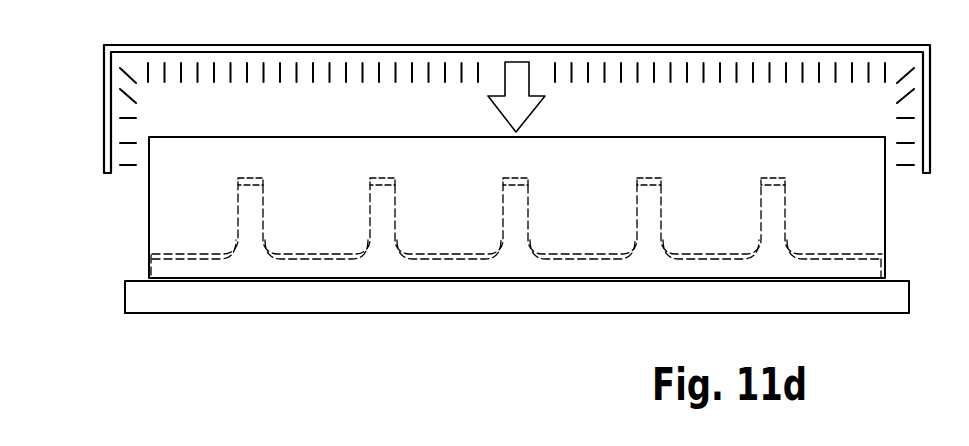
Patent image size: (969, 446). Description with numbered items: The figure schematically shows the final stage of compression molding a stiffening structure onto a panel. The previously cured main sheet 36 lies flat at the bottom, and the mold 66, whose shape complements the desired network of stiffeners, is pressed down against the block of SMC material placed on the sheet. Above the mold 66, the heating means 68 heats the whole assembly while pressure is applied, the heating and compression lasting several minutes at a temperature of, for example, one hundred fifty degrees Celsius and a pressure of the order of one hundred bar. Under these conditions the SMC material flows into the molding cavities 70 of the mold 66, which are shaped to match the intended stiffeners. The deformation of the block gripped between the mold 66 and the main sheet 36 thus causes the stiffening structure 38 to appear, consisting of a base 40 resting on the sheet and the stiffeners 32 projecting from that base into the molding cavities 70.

The stiffeners 32 is at (518, 203).
The main sheet 36 is at (282, 296).
The stiffening structure 38 is at (418, 265).
The base 40 is at (505, 265).
The mold 66 is at (182, 205).
The heating means 68 is at (104, 103).
The molding cavities 70 is at (240, 208).